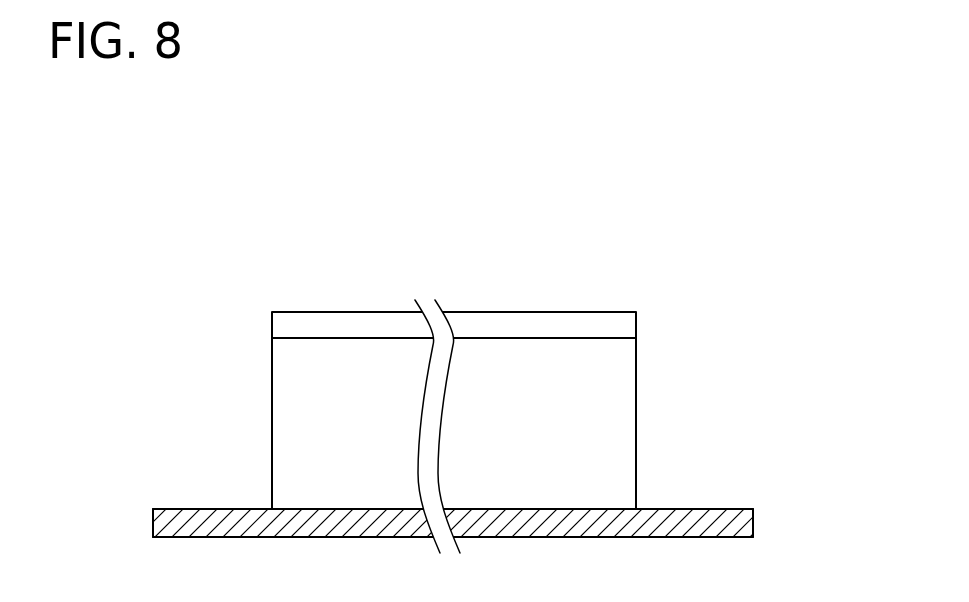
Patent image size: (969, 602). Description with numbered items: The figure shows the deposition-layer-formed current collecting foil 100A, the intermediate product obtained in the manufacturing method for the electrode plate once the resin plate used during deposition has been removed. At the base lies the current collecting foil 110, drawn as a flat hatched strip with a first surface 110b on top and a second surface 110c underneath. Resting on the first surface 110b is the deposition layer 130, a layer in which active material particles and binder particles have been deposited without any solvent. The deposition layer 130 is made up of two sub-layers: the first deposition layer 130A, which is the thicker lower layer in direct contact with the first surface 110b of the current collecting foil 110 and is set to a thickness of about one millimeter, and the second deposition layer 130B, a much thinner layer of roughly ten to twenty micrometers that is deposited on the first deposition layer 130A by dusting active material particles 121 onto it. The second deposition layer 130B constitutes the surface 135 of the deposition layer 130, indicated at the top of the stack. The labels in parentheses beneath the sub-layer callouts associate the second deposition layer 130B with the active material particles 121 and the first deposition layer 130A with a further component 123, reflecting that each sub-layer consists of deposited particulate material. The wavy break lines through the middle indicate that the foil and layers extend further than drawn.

The deposition-layer-formed current collecting foil 100A is at (492, 343).
The current collecting foil 110 is at (492, 523).
The first surface 110b is at (723, 509).
The second surface 110c is at (719, 538).
The deposition layer 130 is at (438, 340).
The first deposition layer 130A is at (456, 363).
The second deposition layer 130B is at (433, 278).
The active material particles 121 is at (433, 292).
The second semiconductor layer 123 is at (585, 381).
The surface of the deposition layer 135 is at (311, 311).